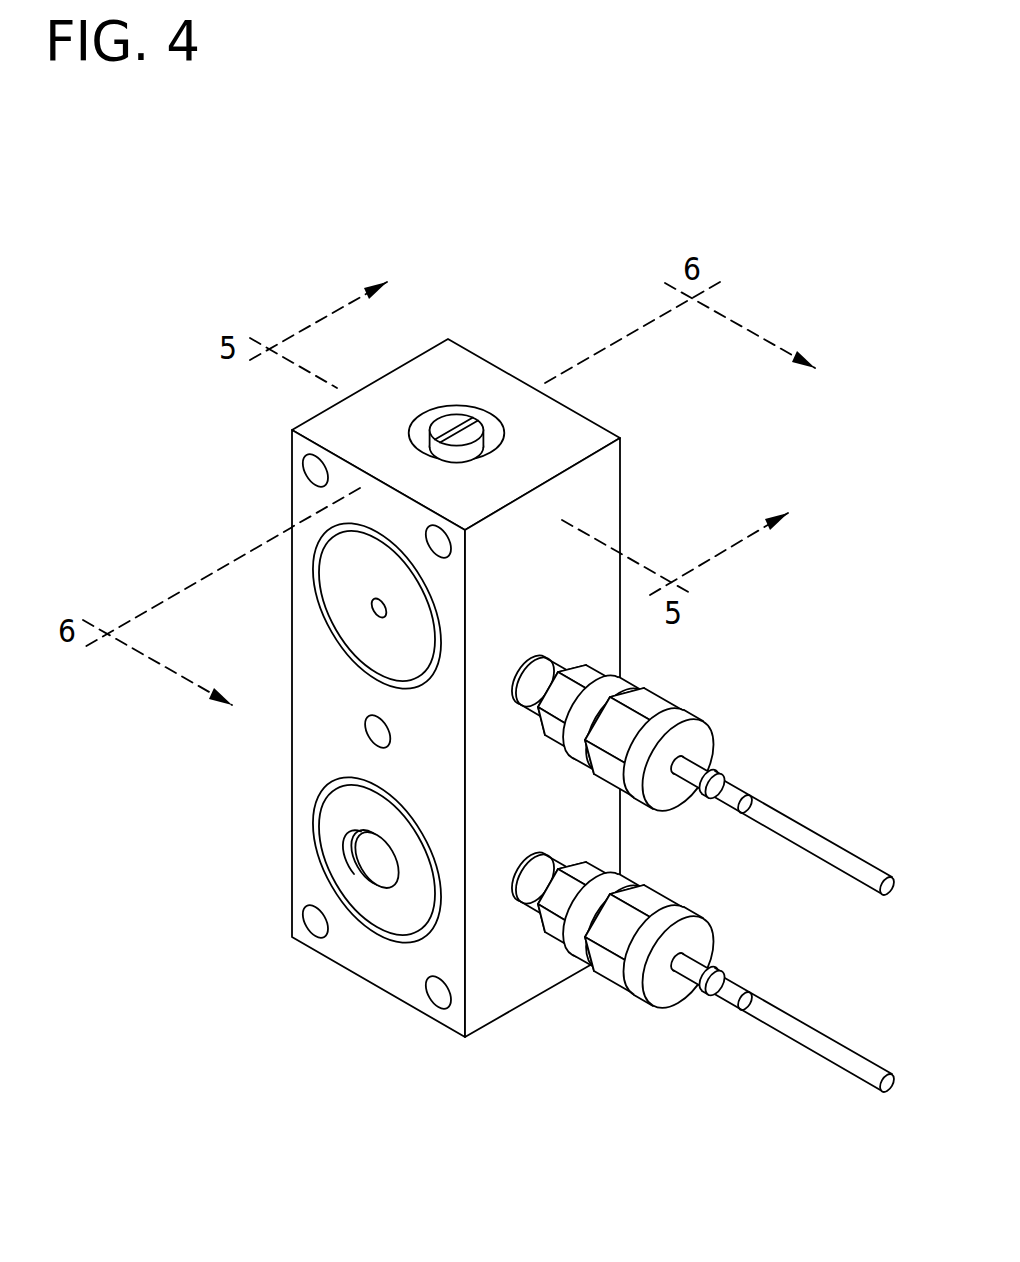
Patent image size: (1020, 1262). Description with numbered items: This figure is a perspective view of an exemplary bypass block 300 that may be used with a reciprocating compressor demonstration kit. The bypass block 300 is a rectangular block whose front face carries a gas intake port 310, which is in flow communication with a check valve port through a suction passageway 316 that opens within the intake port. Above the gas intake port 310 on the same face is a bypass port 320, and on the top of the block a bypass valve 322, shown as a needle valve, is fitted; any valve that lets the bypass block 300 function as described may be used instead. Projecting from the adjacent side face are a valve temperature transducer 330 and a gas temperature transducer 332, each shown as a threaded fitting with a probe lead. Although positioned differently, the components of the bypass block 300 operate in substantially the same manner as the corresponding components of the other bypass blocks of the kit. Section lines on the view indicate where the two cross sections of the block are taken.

The bypass block 300 is at (292, 491).
The gas intake port 310 is at (371, 884).
The suction passageway 316 is at (360, 859).
The bypass port 320 is at (378, 614).
The bypass valve 322 is at (447, 420).
The valve temperature transducer 330 is at (717, 778).
The gas temperature transducer 332 is at (718, 975).